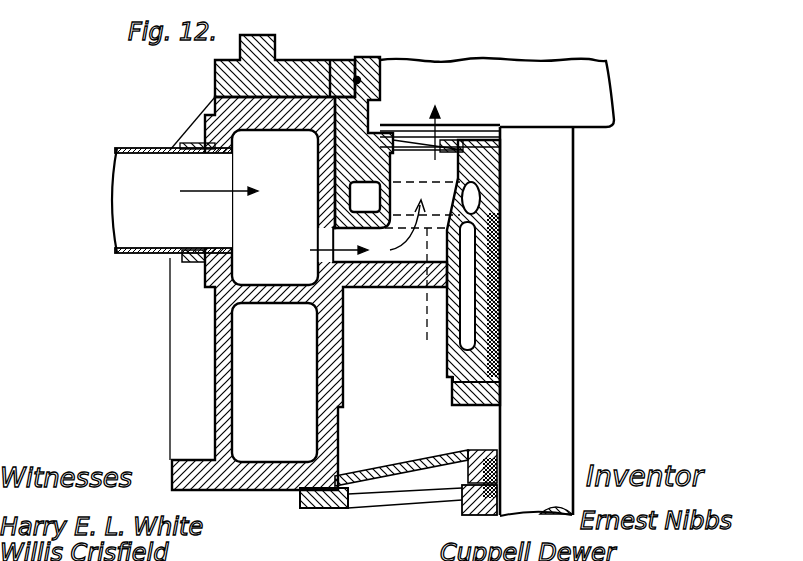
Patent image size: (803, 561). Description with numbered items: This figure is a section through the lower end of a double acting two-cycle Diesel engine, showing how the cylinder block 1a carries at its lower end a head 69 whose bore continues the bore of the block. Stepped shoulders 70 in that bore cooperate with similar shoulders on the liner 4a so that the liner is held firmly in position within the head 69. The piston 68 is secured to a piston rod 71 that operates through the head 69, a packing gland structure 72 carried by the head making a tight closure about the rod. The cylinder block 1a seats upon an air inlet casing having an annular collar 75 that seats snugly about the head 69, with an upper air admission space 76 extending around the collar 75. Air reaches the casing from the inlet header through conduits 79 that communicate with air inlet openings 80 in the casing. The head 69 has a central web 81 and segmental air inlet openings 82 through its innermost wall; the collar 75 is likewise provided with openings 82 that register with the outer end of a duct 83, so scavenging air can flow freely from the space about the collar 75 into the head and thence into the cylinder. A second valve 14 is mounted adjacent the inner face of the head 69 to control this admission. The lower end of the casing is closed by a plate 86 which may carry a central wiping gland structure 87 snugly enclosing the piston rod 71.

The cylinder block 1a is at (215, 68).
The stepped shoulders 70 is at (357, 80).
The liner 4a is at (437, 67).
The second valve 14 is at (402, 132).
The segmental air inlet openings 82 is at (442, 160).
The conduits 79 is at (115, 150).
The air inlet openings 80 is at (230, 175).
The annular collar 75 is at (317, 167).
The upper air admission space 76 is at (182, 262).
The duct 83 is at (378, 283).
The head 69 is at (405, 282).
The central web 81 is at (415, 300).
The packing gland structure 72 is at (443, 377).
The piston 68 is at (500, 375).
The piston rod 71 is at (558, 282).
The plate 86 is at (338, 508).
The central wiping gland structure 87 is at (474, 513).